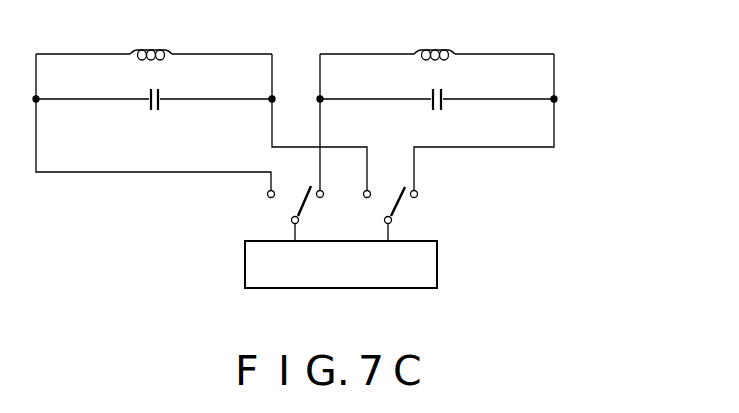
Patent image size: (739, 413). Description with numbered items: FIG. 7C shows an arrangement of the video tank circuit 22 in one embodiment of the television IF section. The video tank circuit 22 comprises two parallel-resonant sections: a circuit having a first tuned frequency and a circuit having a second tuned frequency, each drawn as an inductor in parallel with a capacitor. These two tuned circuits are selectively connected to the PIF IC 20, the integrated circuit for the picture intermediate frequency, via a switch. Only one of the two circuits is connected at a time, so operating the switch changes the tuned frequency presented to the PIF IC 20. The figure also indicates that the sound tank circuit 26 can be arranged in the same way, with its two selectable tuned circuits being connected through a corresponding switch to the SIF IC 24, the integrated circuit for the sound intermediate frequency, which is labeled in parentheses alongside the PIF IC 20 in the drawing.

The video tank circuit 22 is at (563, 82).
The sound tank circuit 26 is at (339, 110).
The PIF IC 20 is at (437, 267).
The SIF IC 24 is at (391, 237).